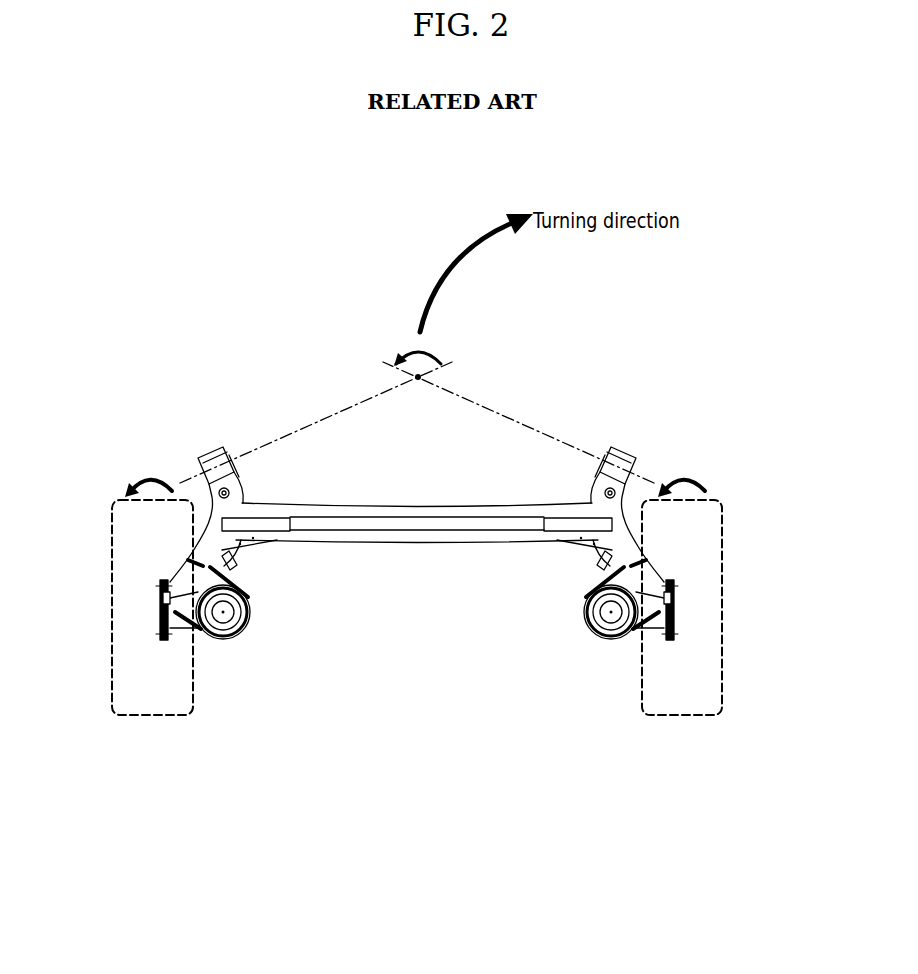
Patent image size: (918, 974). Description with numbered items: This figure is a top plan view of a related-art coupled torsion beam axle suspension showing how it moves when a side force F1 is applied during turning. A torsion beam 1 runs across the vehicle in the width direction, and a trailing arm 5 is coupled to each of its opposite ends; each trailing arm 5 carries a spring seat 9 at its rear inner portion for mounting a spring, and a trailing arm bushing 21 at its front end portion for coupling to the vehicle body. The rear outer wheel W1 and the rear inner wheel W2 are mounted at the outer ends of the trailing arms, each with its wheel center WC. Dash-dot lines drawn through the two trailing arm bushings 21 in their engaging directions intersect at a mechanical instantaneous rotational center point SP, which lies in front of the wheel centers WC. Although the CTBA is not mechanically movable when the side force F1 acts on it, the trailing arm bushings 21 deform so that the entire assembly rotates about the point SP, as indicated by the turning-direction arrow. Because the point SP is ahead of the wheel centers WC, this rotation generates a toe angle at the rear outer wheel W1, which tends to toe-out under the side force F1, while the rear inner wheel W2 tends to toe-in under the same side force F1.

The torsion beam 1 is at (415, 544).
The trailing arm bushing 21 is at (209, 455).
The trailing arm 5 is at (234, 566).
The spring seat 9 is at (250, 623).
The wheel center WC is at (150, 609).
The rear outer wheel W1 is at (161, 718).
The rear inner wheel W2 is at (689, 718).
The side force F1 is at (98, 611).
The mechanical instantaneous rotational center point SP is at (418, 383).